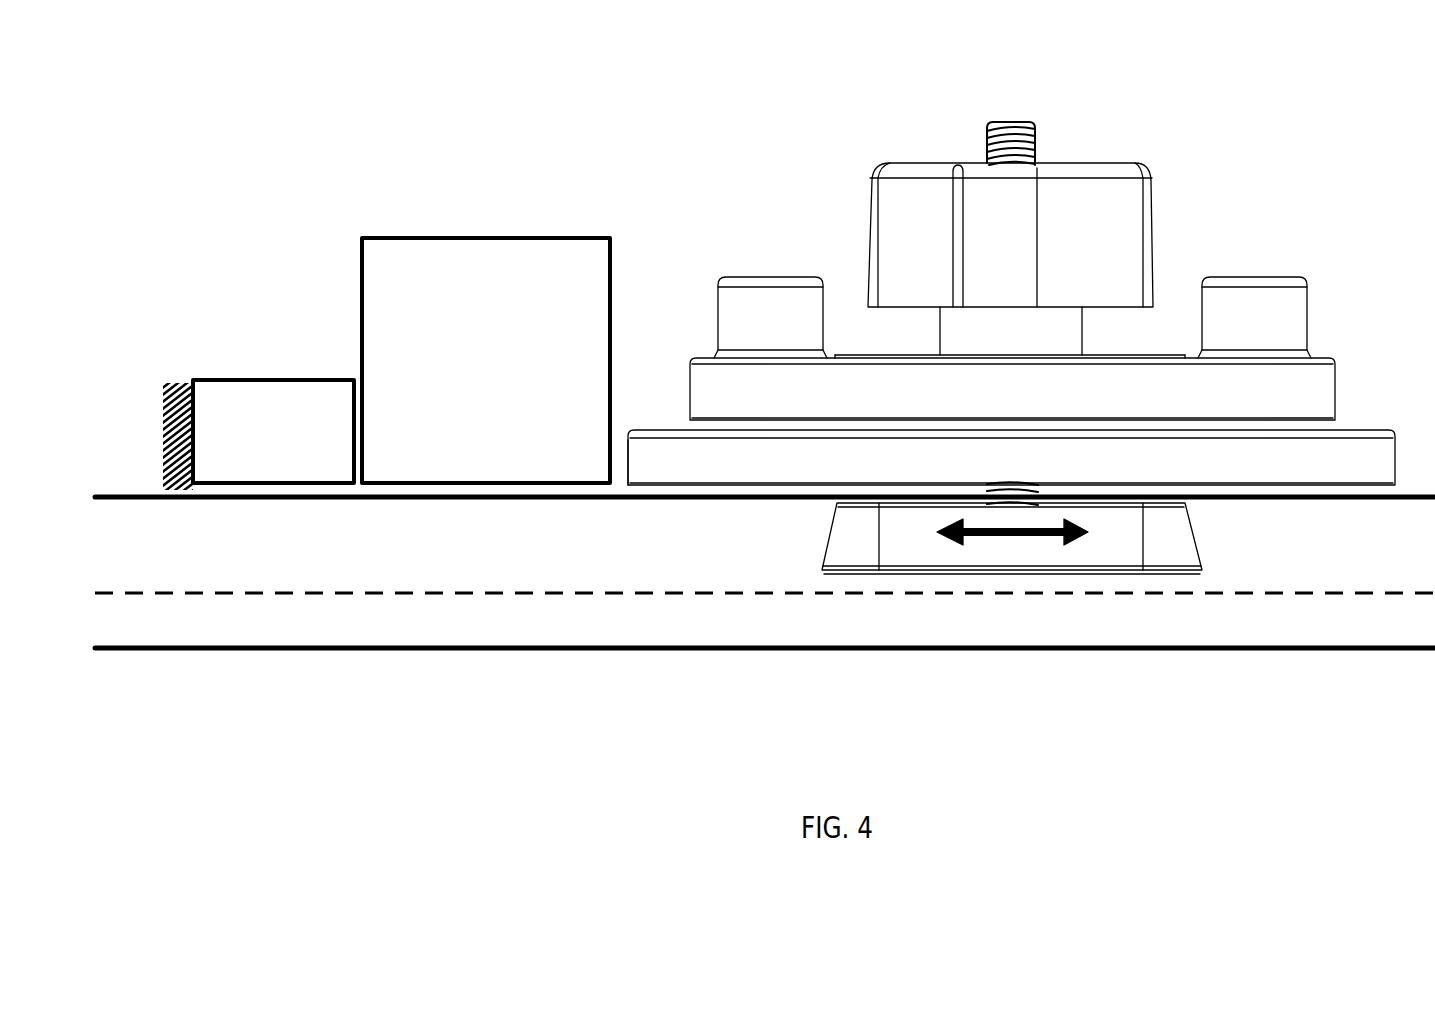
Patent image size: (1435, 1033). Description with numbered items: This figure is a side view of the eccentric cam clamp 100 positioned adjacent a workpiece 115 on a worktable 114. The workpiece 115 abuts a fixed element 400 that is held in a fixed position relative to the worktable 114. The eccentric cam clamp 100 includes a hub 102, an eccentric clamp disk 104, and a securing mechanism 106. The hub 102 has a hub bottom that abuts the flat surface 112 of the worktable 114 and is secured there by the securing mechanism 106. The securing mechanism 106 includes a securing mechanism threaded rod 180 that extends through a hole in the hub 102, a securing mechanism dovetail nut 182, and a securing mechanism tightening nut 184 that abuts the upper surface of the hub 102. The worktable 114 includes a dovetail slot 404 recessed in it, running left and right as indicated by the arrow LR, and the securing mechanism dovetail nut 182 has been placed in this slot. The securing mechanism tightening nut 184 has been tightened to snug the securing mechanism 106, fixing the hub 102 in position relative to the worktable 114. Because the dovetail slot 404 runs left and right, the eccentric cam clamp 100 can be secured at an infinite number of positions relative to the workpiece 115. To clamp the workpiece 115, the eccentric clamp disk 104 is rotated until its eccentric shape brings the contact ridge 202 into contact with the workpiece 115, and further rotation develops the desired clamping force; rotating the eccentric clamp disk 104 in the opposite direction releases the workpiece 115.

The eccentric cam clamp 100 is at (1276, 129).
The hub 102 is at (1161, 339).
The eccentric clamp disk 104 is at (1323, 390).
The securing mechanism 106 is at (882, 111).
The flat surface 112 is at (447, 499).
The worktable 114 is at (310, 638).
The workpiece 115 is at (464, 374).
The securing mechanism threaded rod 180 is at (1022, 122).
The securing mechanism dovetail nut 182 is at (1177, 548).
The securing mechanism tightening nut 184 is at (1068, 223).
The contact ridge 202 is at (630, 437).
The fixed element 400 is at (254, 451).
The dovetail slot 404 is at (708, 560).
The arrow LR is at (1012, 535).